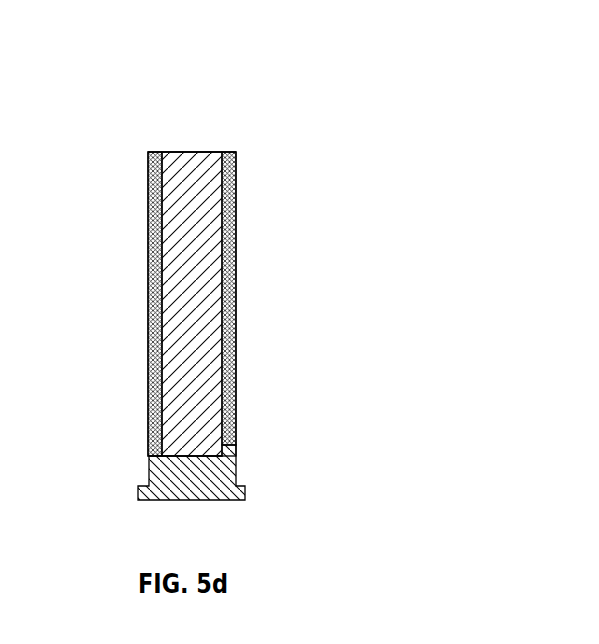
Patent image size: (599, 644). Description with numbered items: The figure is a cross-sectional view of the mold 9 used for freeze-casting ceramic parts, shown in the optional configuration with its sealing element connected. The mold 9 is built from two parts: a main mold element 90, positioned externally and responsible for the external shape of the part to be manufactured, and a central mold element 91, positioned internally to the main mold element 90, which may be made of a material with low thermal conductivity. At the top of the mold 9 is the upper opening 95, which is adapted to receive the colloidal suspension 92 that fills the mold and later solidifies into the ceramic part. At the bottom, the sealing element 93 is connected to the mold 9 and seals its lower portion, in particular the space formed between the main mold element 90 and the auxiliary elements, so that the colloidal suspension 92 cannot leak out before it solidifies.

The mold 9 is at (124, 350).
The main mold element 90 is at (148, 282).
The central mold element 91 is at (192, 152).
The colloidal suspension 92 is at (157, 152).
The sealing element 93 is at (149, 479).
The upper opening 95 is at (224, 140).